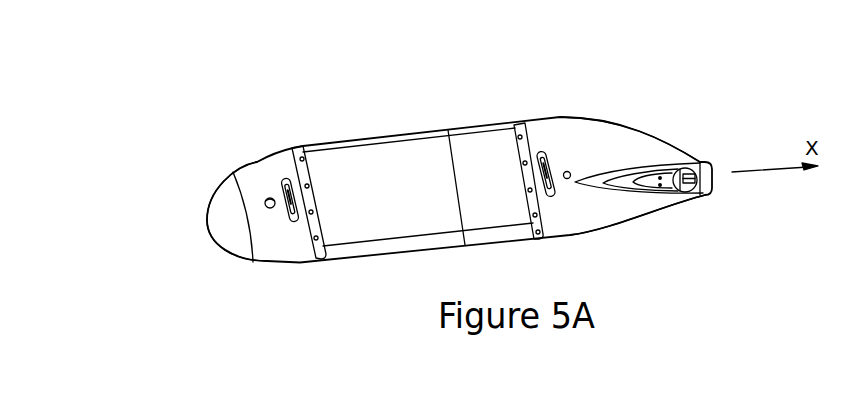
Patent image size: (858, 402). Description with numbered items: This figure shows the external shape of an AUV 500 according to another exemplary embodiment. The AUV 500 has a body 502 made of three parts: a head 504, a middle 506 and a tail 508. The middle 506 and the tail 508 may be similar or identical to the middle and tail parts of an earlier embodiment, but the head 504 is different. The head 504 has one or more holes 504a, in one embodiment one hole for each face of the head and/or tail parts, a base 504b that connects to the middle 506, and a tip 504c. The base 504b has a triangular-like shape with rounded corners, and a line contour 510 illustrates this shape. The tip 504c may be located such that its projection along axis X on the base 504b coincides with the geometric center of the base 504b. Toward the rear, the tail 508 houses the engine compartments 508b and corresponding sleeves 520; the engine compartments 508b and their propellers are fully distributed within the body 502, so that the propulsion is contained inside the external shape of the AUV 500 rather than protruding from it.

The AUV 500 is at (416, 83).
The body 502 is at (476, 122).
The head 504 is at (258, 165).
The holes 504a is at (267, 209).
The base 504b is at (316, 231).
The tip 504c is at (204, 219).
The middle 506 is at (428, 157).
The tail 508 is at (610, 143).
The engine compartments 508b is at (672, 178).
The line contour 510 is at (304, 192).
The sleeves 520 is at (561, 401).